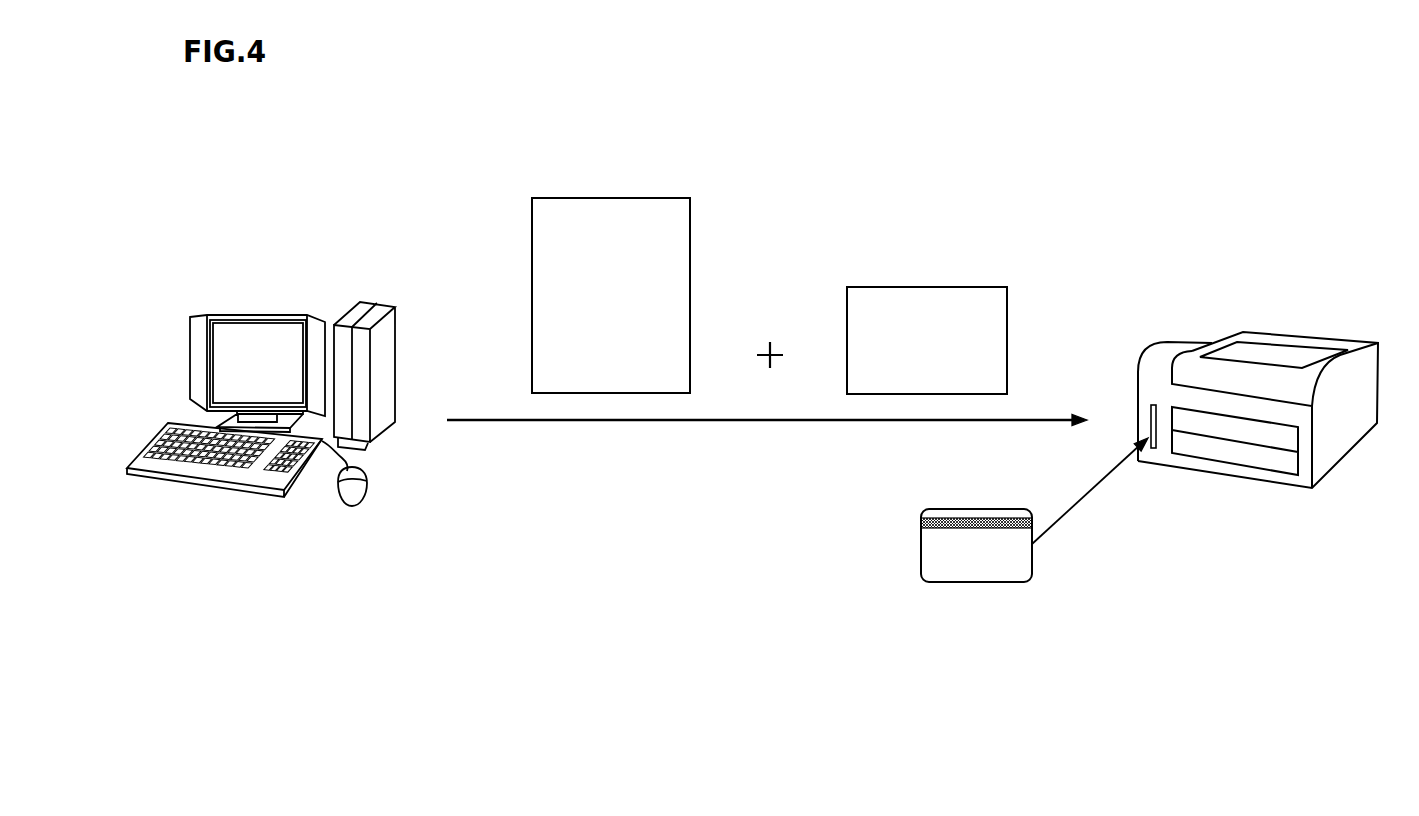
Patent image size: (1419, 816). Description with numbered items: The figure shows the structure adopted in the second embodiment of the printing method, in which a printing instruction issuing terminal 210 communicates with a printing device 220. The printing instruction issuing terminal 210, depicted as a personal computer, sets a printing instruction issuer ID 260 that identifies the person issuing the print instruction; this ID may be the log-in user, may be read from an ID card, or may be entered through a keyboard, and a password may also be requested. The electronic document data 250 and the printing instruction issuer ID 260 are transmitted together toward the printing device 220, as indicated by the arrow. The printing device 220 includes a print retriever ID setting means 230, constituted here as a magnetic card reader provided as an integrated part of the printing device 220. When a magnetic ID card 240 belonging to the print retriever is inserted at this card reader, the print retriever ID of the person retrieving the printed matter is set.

The printing instruction issuing terminal 210 is at (257, 315).
The printing device 220 is at (1323, 338).
The print retriever ID setting means 230 is at (1173, 338).
The magnetic ID card 240 is at (977, 583).
The electronic document data 250 is at (610, 198).
The printing instruction issuer ID 260 is at (927, 287).